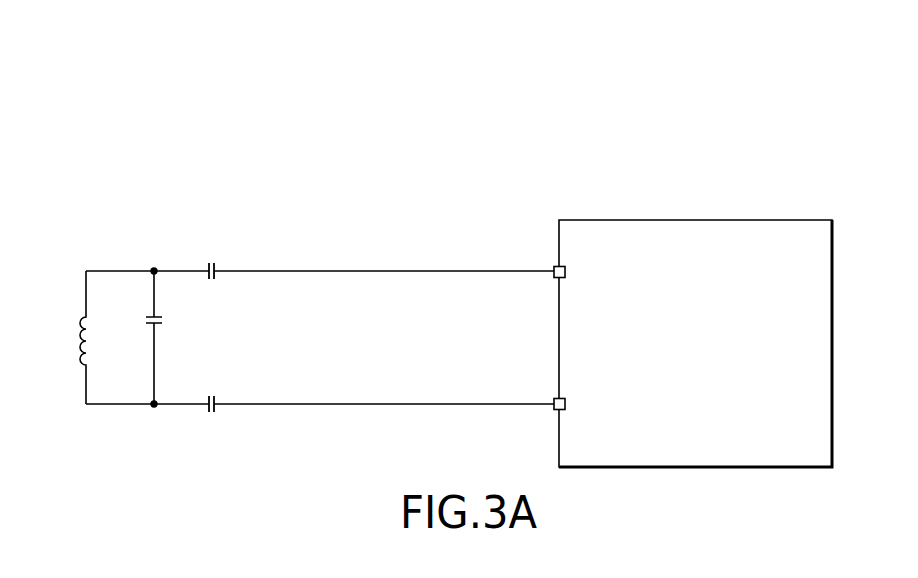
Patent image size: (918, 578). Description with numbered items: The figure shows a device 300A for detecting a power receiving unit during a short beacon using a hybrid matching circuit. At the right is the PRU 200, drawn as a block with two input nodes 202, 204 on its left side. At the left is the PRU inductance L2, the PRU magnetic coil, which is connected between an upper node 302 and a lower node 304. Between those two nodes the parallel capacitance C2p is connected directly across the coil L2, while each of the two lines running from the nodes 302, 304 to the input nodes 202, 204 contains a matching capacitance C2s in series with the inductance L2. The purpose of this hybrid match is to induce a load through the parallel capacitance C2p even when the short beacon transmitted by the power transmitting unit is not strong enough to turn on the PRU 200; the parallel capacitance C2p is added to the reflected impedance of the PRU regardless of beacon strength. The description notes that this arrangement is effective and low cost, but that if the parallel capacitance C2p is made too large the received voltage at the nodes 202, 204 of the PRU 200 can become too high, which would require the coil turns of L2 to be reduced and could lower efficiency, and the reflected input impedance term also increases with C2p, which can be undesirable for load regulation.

The device 300A is at (163, 192).
The first node 302 is at (154, 271).
The second node 304 is at (154, 404).
The input node 202 is at (565, 272).
The input node 204 is at (565, 404).
The PRU 200 is at (716, 360).
The PRU inductance L2 is at (97, 337).
The parallel capacitance C2p is at (174, 337).
The matching capacitance C2s is at (218, 323).